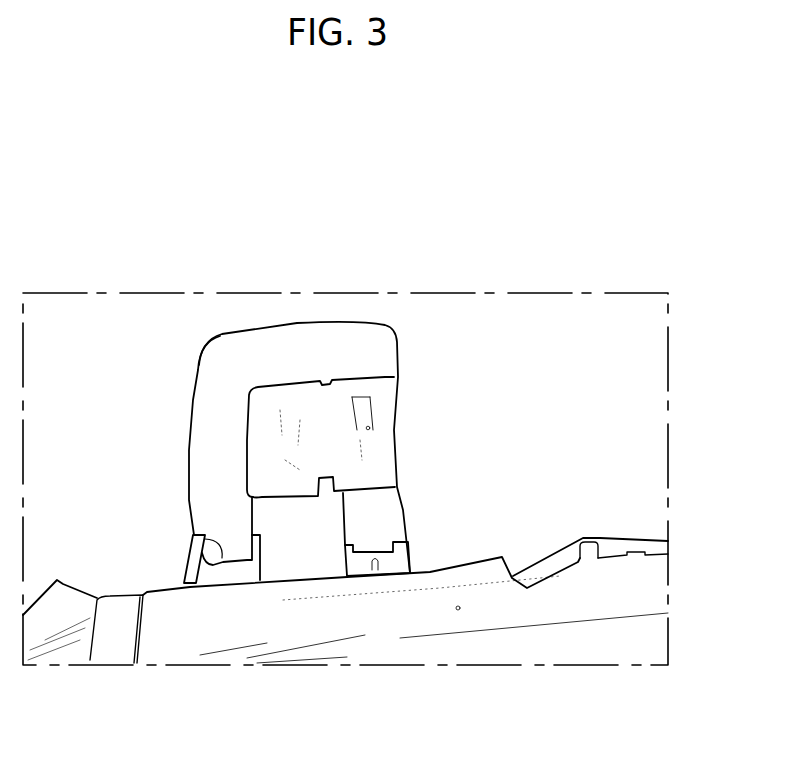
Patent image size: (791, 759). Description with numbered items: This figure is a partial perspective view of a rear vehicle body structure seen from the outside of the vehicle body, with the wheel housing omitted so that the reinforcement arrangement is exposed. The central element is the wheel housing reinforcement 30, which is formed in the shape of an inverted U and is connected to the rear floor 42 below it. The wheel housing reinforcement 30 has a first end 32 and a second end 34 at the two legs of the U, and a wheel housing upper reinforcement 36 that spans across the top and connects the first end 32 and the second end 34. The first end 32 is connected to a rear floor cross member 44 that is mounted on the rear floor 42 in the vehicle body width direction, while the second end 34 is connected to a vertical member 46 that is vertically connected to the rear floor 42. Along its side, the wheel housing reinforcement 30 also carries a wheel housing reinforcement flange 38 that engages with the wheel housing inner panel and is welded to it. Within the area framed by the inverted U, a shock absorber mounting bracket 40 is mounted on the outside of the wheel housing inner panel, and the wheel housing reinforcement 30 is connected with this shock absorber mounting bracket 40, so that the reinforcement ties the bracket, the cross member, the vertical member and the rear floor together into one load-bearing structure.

The wheel housing reinforcement 30 is at (300, 406).
The first end 32 is at (190, 545).
The second end 34 is at (378, 545).
The wheel housing upper reinforcement 36 is at (290, 353).
The wheel housing reinforcement flange 38 is at (207, 352).
The shock absorber mounting bracket 40 is at (373, 430).
The rear floor 42 is at (522, 660).
The rear floor cross member 44 is at (190, 570).
The vertical member 46 is at (412, 553).